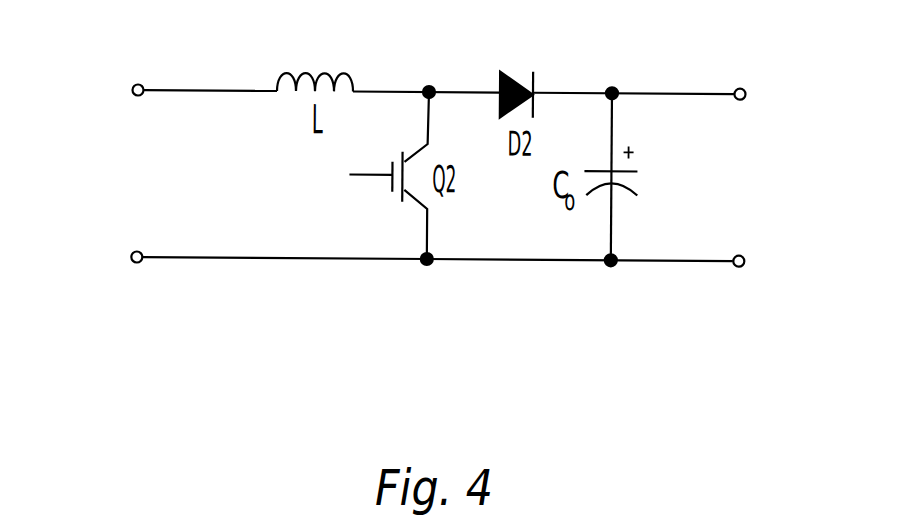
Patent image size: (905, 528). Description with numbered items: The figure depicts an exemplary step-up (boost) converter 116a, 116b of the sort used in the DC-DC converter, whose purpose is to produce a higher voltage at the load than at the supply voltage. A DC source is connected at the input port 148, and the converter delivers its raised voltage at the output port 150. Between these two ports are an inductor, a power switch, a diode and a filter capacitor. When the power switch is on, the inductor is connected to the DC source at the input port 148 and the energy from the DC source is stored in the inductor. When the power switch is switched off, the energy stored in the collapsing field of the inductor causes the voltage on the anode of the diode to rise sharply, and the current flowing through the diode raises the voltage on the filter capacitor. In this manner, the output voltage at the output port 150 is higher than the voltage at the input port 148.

The step-up (boost) converter 116a is at (170, 58).
The step-up (boost) converter 116b is at (218, 58).
The input port 148 is at (73, 66).
The output port 150 is at (812, 73).